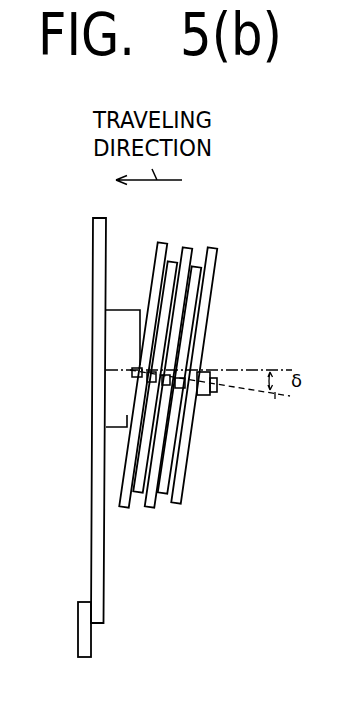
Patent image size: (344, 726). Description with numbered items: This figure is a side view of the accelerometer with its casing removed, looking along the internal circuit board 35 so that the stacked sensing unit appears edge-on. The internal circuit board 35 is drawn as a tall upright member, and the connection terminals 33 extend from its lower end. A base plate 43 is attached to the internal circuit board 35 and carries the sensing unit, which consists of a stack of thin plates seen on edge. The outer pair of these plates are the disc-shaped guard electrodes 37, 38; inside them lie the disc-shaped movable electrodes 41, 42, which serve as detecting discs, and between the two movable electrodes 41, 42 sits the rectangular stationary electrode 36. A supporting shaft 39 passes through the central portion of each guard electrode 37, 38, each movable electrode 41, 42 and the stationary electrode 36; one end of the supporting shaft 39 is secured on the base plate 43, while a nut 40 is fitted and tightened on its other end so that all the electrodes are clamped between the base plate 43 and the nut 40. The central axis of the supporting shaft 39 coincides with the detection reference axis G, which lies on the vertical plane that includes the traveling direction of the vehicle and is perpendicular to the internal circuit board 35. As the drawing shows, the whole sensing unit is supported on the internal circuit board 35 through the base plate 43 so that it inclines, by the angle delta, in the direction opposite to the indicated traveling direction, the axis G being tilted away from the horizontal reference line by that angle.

The connection terminals 33 is at (80, 602).
The internal circuit board 35 is at (101, 218).
The stationary electrode 36 is at (188, 249).
The guard electrode 37 is at (163, 243).
The guard electrode 38 is at (216, 253).
The supporting shaft 39 is at (212, 395).
The nut 40 is at (203, 398).
The movable electrode 41 is at (162, 494).
The movable electrode 42 is at (137, 493).
The base plate 43 is at (106, 325).
The detection reference axis G is at (277, 400).